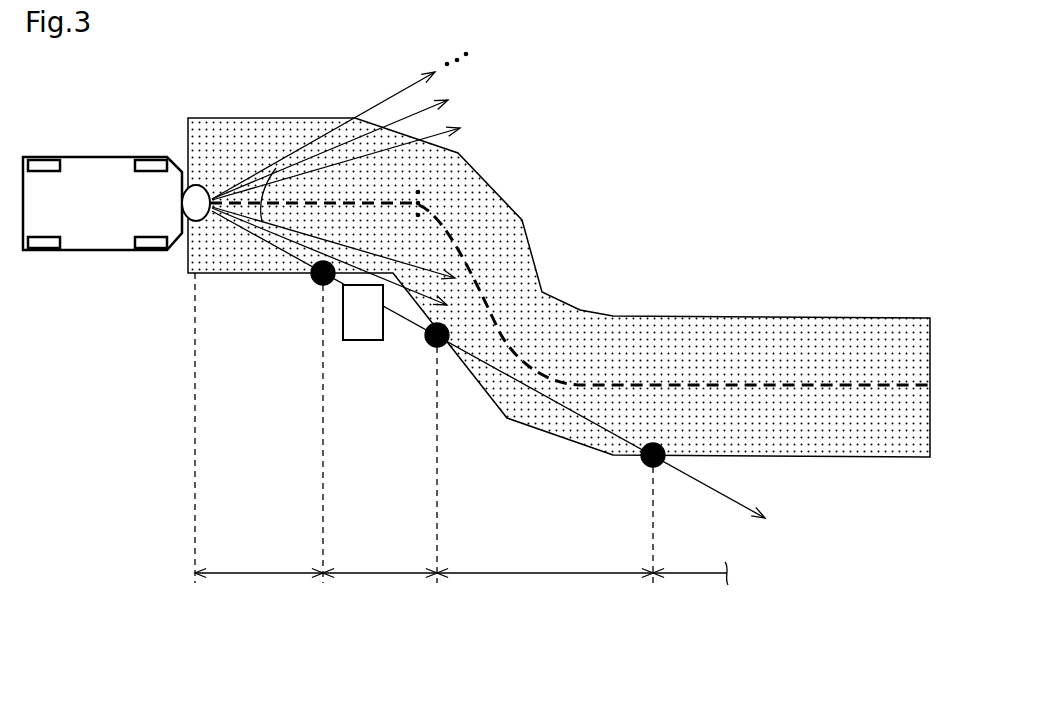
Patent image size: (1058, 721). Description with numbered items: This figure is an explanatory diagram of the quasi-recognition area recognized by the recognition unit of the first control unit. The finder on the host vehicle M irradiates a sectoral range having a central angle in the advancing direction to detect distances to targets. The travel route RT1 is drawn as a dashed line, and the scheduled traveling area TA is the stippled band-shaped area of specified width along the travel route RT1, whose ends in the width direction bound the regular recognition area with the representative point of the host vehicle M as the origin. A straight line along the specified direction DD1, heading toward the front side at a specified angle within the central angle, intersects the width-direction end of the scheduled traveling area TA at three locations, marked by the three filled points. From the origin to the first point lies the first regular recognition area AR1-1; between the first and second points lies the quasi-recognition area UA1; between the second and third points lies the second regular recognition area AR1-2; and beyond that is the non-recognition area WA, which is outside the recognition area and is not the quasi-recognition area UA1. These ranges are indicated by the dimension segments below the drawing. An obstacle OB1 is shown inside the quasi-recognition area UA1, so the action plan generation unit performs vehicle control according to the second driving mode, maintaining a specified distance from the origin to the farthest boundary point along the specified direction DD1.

The host vehicle M is at (98, 255).
The scheduled traveling area TA is at (490, 180).
The travel route RT1 is at (796, 384).
The obstacle OB1 is at (363, 342).
The specified direction DD1 is at (713, 497).
The first regular recognition area AR1-1 is at (257, 576).
The quasi-recognition area UA1 is at (380, 576).
The second regular recognition area AR1-2 is at (545, 576).
The non-recognition area WA is at (700, 576).